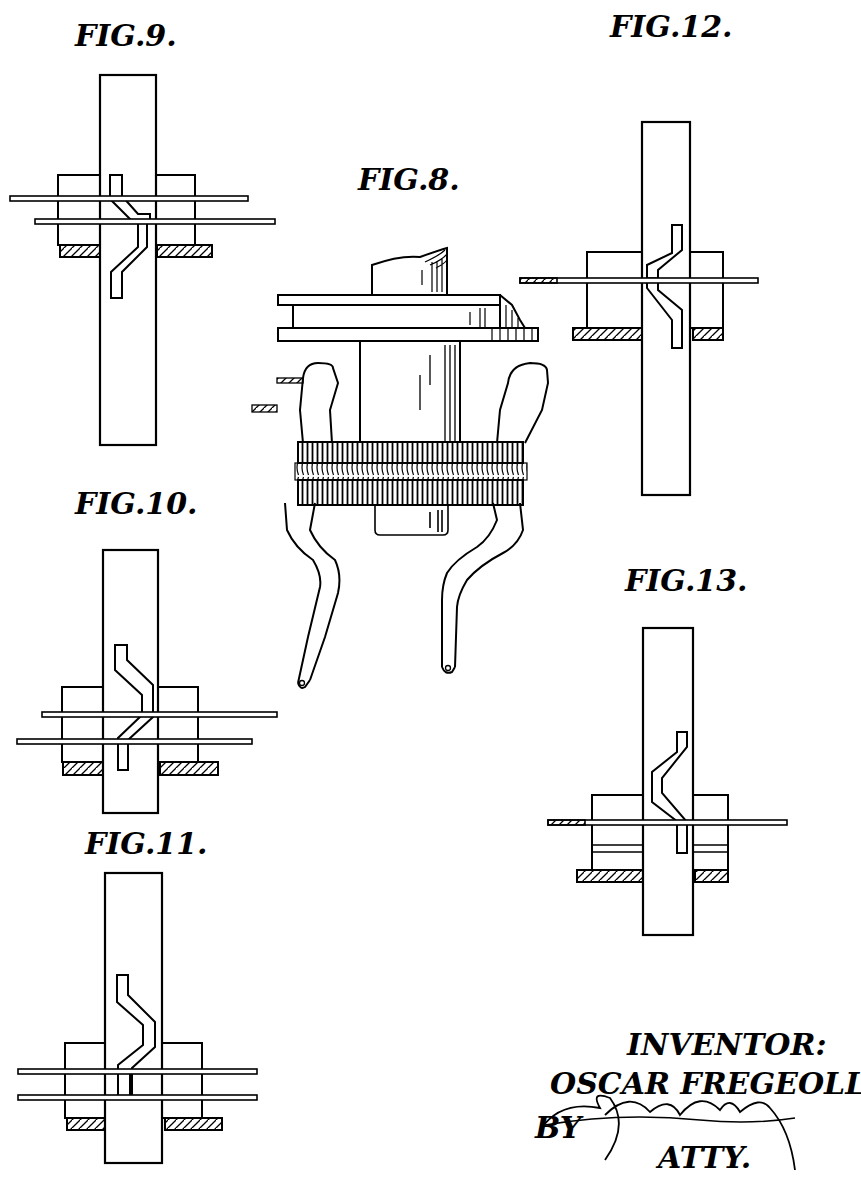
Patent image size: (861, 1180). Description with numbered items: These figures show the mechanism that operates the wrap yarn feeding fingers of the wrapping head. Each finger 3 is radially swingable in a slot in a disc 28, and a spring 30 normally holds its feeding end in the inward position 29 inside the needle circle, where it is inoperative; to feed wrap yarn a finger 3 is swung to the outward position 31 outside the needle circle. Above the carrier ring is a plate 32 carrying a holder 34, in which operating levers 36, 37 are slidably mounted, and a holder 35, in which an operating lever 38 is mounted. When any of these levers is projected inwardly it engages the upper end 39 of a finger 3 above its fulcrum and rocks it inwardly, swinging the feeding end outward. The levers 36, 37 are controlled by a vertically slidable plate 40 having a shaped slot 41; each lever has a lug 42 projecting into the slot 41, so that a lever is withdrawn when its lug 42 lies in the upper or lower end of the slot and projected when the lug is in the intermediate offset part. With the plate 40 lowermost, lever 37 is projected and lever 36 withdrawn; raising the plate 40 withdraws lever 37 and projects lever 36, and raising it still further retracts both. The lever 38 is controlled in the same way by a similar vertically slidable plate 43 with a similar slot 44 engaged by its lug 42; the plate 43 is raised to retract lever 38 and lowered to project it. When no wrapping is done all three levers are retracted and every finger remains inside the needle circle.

In FIG. 8, the wrap yarn feeding finger 3 is at (540, 392).
In FIG. 8, the disc 28 is at (523, 450).
In FIG. 8, the inward position of finger 29 is at (455, 650).
In FIG. 8, the spring 30 is at (525, 476).
In FIG. 8, the outward feeding position of finger 31 is at (310, 672).
In FIG. 9, the plate 32 is at (213, 253).
In FIG. 10, the plate 32 is at (202, 770).
In FIG. 11, the plate 32 is at (217, 1122).
In FIG. 12, the plate 32 is at (715, 333).
In FIG. 13, the plate 32 is at (617, 877).
In FIG. 9, the holder 34 is at (185, 182).
In FIG. 10, the holder 34 is at (180, 692).
In FIG. 11, the holder 34 is at (187, 1048).
In FIG. 12, the holder 35 is at (607, 257).
In FIG. 13, the holder 35 is at (610, 805).
In FIG. 9, the operating lever 36 is at (240, 195).
In FIG. 10, the operating lever 36 is at (220, 713).
In FIG. 11, the operating lever 36 is at (230, 1070).
In FIG. 8, the operating lever 36 is at (298, 378).
In FIG. 9, the operating lever 37 is at (267, 220).
In FIG. 10, the operating lever 37 is at (230, 744).
In FIG. 11, the operating lever 37 is at (247, 1091).
In FIG. 8, the operating lever 37 is at (265, 405).
In FIG. 12, the operating lever 38 is at (560, 280).
In FIG. 13, the operating lever 38 is at (578, 823).
In FIG. 8, the upper end of finger 39 is at (323, 380).
In FIG. 9, the vertically slidable plate 40 is at (145, 122).
In FIG. 10, the vertically slidable plate 40 is at (148, 610).
In FIG. 11, the vertically slidable plate 40 is at (145, 932).
In FIG. 9, the slot 41 is at (127, 213).
In FIG. 10, the slot 41 is at (132, 677).
In FIG. 11, the slot 41 is at (133, 1002).
In FIG. 9, the lug 42 is at (145, 213).
In FIG. 10, the lug 42 is at (147, 717).
In FIG. 11, the lug 42 is at (128, 1080).
In FIG. 12, the lug 42 is at (652, 288).
In FIG. 13, the lug 42 is at (683, 820).
In FIG. 12, the vertically slidable plate 43 is at (651, 150).
In FIG. 13, the vertically slidable plate 43 is at (685, 652).
In FIG. 12, the slot 44 is at (677, 237).
In FIG. 13, the slot 44 is at (683, 748).